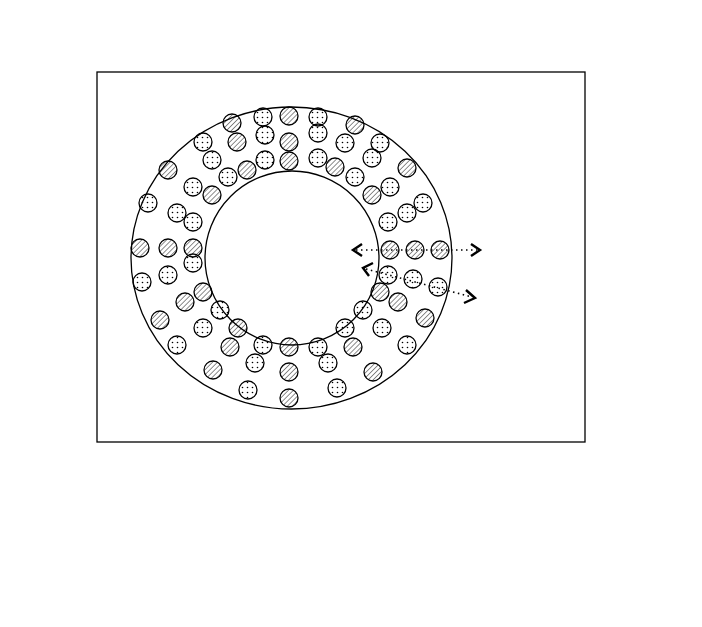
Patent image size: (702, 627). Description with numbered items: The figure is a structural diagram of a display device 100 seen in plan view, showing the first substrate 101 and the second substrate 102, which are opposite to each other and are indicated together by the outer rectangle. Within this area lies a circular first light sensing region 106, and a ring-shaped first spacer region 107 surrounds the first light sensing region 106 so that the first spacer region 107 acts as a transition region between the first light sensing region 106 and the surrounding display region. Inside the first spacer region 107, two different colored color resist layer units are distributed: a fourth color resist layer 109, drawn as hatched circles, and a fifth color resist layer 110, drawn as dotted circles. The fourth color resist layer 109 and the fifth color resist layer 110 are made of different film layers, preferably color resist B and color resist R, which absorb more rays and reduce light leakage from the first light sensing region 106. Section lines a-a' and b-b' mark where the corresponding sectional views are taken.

The display device 100 is at (98, 43).
The first substrate 101 is at (341, 257).
The second substrate 102 is at (341, 257).
The first light sensing region 106 is at (292, 258).
The first spacer region 107 is at (373, 128).
The fourth color resist layer 109 is at (406, 168).
The fifth color resist layer 110 is at (427, 203).